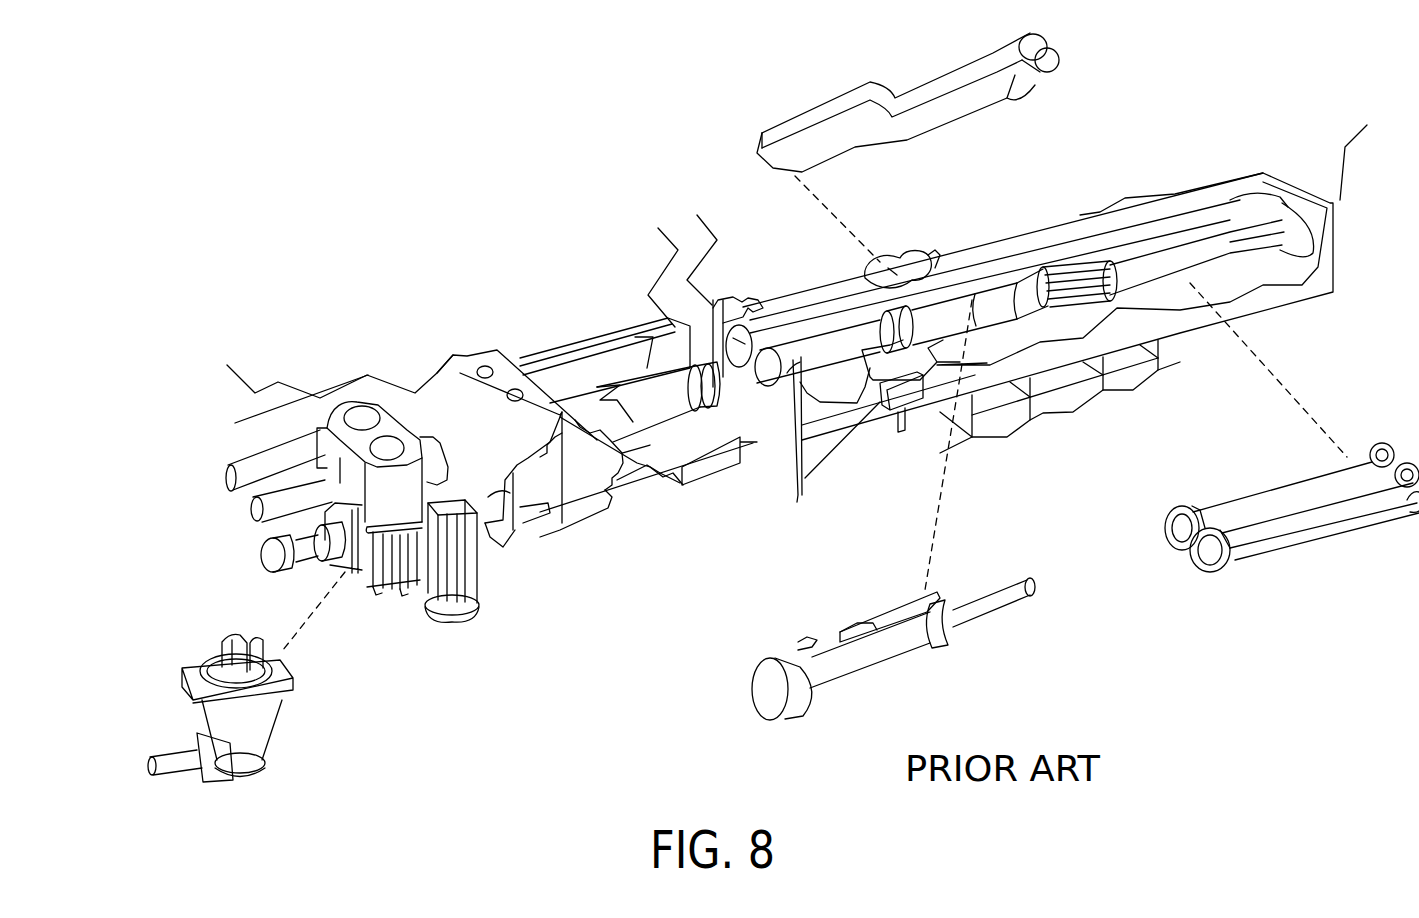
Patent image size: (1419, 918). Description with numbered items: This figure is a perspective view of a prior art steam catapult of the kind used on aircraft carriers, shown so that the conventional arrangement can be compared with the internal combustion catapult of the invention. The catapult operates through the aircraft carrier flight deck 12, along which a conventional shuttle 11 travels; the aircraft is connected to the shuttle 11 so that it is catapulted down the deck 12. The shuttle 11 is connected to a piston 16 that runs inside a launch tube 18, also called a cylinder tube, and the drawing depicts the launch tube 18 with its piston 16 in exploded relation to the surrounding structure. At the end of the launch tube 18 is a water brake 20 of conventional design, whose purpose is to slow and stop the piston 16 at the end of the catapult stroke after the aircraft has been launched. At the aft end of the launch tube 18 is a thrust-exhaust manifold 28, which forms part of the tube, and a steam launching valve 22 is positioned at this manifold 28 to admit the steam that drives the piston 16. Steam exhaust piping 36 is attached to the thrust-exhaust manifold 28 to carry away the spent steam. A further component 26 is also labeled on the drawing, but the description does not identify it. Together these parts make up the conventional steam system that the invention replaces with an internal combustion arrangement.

The shuttle 11 is at (930, 223).
The aircraft carrier flight deck 12 is at (780, 293).
The piston 16 is at (837, 632).
The launch tube 18 is at (733, 338).
The water brake 20 is at (1275, 550).
The steam launching valve 22 is at (388, 600).
The side panel 26 is at (515, 500).
The thrust-exhaust manifold 28 is at (438, 455).
The steam exhaust piping 36 is at (477, 613).